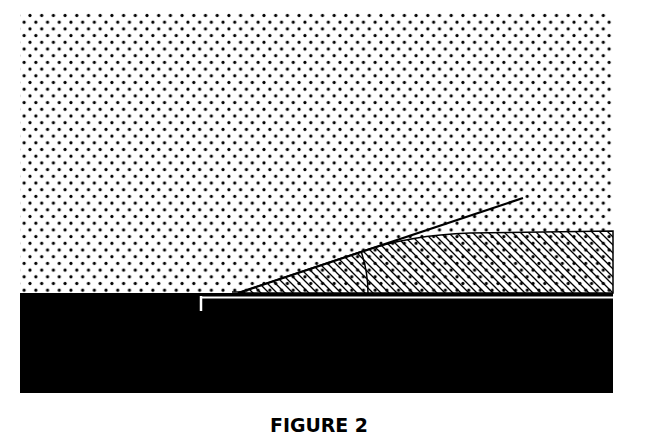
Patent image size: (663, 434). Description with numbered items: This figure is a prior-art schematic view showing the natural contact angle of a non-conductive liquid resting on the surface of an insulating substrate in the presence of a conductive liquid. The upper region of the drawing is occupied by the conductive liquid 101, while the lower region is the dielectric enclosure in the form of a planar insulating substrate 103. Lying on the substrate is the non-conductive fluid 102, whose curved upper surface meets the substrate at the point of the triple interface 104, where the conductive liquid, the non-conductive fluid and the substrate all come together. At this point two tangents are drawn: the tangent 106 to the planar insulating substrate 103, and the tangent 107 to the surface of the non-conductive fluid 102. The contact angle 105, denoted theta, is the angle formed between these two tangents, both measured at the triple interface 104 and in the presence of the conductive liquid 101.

The conductive liquid 101 is at (316, 153).
The non-conductive fluid 102 is at (425, 262).
The planar insulating substrate 103 is at (316, 343).
The point of the triple interface 104 is at (235, 290).
The contact angle 105 is at (372, 275).
The tangent to the substrate 106 is at (192, 301).
The tangent to the surface of the non-conductive fluid 107 is at (397, 230).